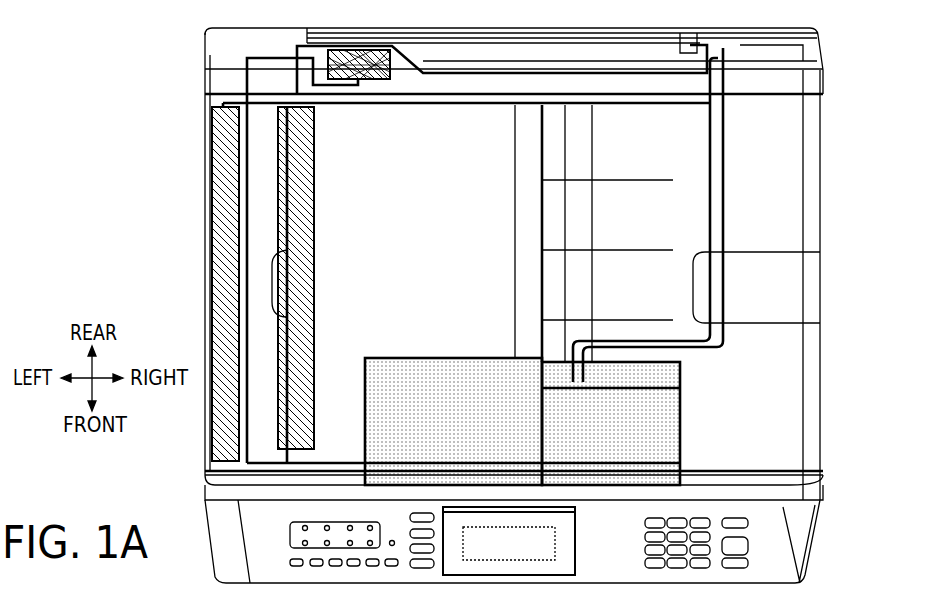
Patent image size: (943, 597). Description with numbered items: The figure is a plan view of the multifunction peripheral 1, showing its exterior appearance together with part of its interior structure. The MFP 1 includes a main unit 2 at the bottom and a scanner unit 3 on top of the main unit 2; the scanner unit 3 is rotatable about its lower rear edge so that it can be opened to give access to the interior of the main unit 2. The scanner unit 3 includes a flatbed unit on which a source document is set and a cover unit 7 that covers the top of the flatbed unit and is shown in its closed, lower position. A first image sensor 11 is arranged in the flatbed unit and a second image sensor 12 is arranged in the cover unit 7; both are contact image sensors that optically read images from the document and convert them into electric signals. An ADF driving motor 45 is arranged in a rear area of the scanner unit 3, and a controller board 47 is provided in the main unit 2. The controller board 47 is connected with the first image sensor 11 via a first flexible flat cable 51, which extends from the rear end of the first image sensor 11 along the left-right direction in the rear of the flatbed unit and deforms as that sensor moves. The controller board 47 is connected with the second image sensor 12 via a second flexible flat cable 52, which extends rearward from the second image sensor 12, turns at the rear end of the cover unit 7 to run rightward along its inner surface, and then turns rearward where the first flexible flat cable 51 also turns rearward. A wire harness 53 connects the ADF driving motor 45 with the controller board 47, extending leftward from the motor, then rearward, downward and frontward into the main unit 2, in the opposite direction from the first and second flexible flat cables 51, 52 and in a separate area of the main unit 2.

The multifunction peripheral 1 is at (174, 103).
The main unit 2 is at (804, 546).
The scanner unit 3 is at (818, 128).
The cover unit 7 is at (812, 211).
The first image sensor 11 is at (212, 187).
The second image sensor 12 is at (312, 184).
The ADF driving motor 45 is at (390, 78).
The controller board 47 is at (437, 363).
The first flexible flat cable 51 is at (708, 148).
The second flexible flat cable 52 is at (725, 154).
The wire harness 53 is at (343, 463).